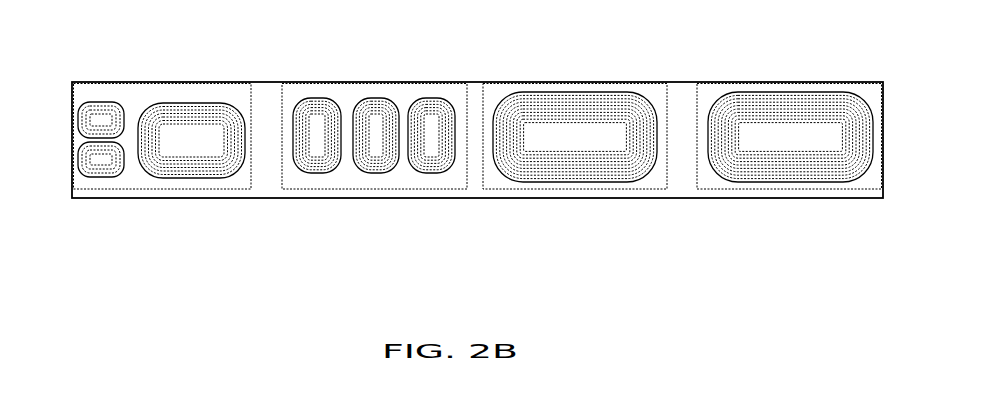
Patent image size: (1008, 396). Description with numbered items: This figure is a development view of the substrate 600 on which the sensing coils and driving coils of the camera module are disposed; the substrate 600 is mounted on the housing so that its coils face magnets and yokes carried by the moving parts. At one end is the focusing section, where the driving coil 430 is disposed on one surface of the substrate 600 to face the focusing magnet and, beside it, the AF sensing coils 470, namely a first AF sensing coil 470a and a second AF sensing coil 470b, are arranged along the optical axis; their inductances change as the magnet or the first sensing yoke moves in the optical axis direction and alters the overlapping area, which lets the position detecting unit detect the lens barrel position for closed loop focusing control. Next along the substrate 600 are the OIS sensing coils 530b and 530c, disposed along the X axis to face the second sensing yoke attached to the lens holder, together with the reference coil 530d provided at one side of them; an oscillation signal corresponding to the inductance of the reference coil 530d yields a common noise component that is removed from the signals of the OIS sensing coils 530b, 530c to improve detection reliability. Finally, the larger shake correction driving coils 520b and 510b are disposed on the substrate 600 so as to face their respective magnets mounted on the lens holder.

The substrate 600 is at (270, 82).
The AF sensing coils 470 is at (121, 190).
The AF sensing coil 470a is at (122, 139).
The AF sensing coil 470b is at (99, 178).
The driving coil 430 is at (203, 178).
The OIS sensing coil 530b is at (318, 173).
The OIS sensing coil 530c is at (370, 173).
The reference coil 530d is at (428, 173).
The driving coil 520b is at (568, 182).
The driving coil 510b is at (787, 182).